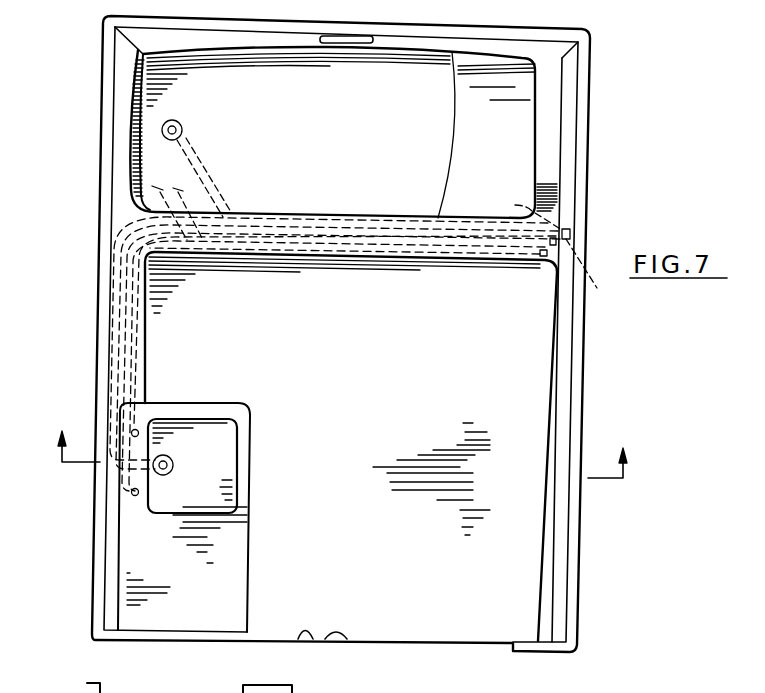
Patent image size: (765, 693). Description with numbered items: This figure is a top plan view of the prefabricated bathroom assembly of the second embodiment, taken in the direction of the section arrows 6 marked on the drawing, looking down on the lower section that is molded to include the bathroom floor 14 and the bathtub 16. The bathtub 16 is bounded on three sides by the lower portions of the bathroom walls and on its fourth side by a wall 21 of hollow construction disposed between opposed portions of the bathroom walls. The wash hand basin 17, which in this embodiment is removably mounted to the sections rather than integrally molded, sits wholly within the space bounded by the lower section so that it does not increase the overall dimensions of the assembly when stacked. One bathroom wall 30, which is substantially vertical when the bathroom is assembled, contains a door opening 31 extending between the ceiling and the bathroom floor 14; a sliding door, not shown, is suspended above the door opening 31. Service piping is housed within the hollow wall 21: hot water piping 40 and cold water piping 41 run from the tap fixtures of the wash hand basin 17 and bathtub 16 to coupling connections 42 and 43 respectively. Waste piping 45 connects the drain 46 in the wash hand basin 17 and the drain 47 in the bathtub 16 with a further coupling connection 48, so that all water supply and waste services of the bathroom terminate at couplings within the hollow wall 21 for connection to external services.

The bathroom floor 14 is at (351, 446).
The bathtub 16 is at (343, 132).
The wash hand basin 17 is at (232, 462).
The wall 21 is at (292, 254).
The bathroom wall 30 is at (306, 632).
The door opening 31 is at (347, 637).
The hot water piping 40 is at (367, 252).
The cold water piping 41 is at (408, 243).
The coupling connection 42 is at (555, 257).
The coupling connection 43 is at (593, 271).
The waste piping 45 is at (341, 226).
The drain 46 is at (170, 472).
The drain 47 is at (182, 130).
The coupling connection 48 is at (521, 210).
The section line 6- 6 is at (342, 451).